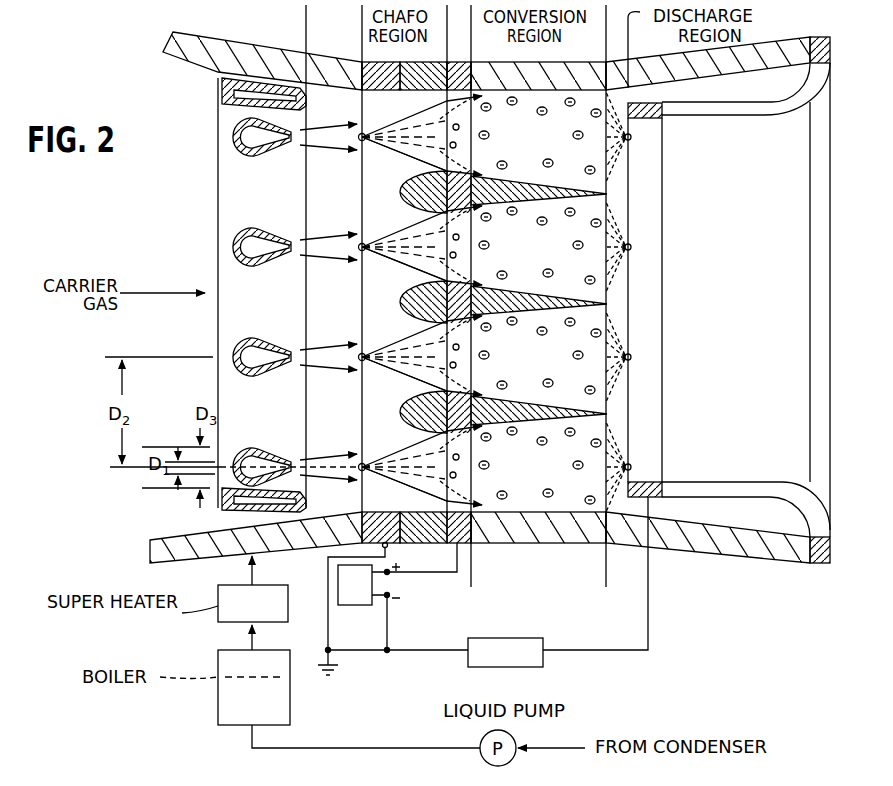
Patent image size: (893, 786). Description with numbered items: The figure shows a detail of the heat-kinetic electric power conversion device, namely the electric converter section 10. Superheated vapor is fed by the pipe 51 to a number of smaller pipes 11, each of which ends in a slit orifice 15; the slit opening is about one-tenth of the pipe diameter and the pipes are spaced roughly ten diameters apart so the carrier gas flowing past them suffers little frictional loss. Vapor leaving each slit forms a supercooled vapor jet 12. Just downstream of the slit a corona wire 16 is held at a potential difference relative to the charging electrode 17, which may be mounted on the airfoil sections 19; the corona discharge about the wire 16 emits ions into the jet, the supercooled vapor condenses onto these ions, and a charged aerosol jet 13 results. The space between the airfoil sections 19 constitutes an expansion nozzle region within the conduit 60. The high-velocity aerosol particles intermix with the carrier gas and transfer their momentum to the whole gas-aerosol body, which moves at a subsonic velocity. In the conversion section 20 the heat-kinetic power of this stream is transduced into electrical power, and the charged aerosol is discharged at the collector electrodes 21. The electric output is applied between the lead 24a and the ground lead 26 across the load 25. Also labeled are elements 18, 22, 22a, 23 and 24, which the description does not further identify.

The electric converter section 10 is at (205, 80).
The smaller pipes 11 is at (230, 140).
The supercooled vapor jet 12 is at (331, 145).
The charged aerosol jet 13 is at (388, 148).
The slit orifice 15 is at (300, 130).
The corona wire 16 is at (371, 125).
The charging electrode 17 is at (455, 61).
The voltage source 18 is at (360, 601).
The airfoil sections 19 is at (400, 304).
The conversion section 20 is at (540, 300).
The collector electrodes 21 is at (632, 139).
The electrode lead 22 is at (473, 579).
The collector electrode 22a is at (664, 234).
The collector lead 23 is at (607, 576).
The discharge pipe 24 is at (818, 36).
The lead 24a is at (648, 626).
The load 25 is at (523, 637).
The ground lead 26 is at (421, 651).
The pipe 51 is at (218, 107).
The conduit 60 is at (347, 509).